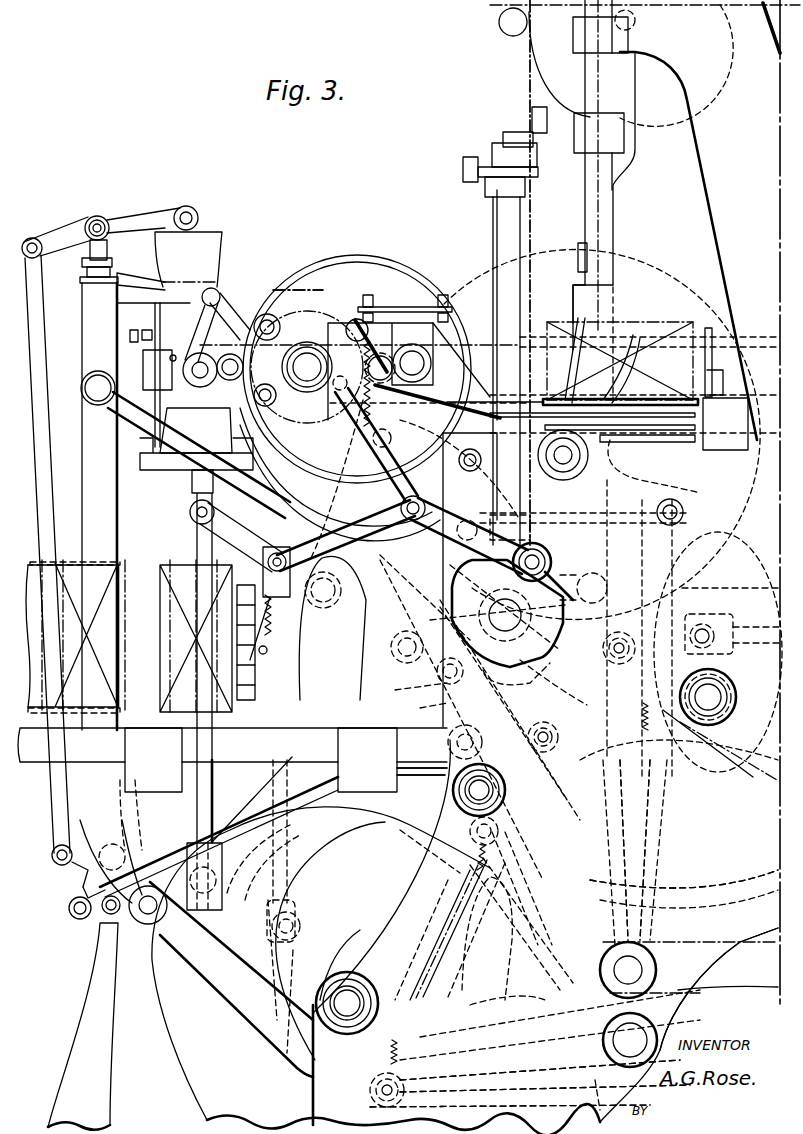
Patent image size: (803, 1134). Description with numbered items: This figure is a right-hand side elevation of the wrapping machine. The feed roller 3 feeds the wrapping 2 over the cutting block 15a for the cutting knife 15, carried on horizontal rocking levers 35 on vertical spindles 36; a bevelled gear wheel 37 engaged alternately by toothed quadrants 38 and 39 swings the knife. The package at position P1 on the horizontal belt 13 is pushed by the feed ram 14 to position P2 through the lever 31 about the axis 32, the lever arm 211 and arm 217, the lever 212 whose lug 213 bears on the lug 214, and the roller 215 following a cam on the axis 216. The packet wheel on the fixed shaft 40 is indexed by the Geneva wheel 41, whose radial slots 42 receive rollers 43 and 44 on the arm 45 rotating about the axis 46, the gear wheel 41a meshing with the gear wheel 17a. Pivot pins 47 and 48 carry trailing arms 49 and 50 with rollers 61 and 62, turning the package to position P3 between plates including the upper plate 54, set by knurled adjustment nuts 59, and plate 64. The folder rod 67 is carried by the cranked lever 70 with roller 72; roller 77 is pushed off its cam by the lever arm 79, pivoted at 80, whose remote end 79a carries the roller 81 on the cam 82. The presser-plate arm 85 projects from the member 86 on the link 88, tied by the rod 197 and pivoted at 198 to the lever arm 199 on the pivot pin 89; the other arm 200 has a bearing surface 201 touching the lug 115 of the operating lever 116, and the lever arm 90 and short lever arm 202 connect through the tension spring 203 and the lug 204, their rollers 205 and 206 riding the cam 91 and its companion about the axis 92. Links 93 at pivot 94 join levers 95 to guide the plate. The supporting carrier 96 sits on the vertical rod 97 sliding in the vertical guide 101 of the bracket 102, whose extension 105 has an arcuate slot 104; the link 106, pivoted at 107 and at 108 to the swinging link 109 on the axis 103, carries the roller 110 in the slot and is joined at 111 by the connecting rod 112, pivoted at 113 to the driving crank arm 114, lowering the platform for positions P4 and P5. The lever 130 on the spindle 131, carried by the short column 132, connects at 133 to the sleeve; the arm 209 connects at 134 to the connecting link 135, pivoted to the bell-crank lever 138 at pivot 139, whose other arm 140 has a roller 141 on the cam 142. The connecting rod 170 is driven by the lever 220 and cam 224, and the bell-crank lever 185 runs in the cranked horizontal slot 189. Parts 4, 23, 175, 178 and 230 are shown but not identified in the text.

The wrapping 2 is at (525, 78).
The feed roller 3 is at (500, 28).
The frame arm 4 is at (657, 107).
The horizontal belt 13 is at (668, 398).
The feed ram 14 is at (725, 345).
The cutting knife 15 is at (503, 140).
The cutting block 15a is at (530, 118).
The gear wheel 17a is at (303, 285).
The beam 23 is at (72, 580).
The lever 31 is at (719, 989).
The axis 32 is at (632, 970).
The horizontal rocking levers 35 is at (463, 165).
The vertical spindles 36 is at (505, 225).
The bevelled gear wheel 37 is at (520, 514).
The toothed quadrant 38 is at (488, 694).
The toothed quadrant 39 is at (516, 686).
The fixed shaft 40 is at (307, 350).
The Geneva wheel 41 is at (625, 485).
The gear wheel 41a is at (545, 268).
The radial slots 42 is at (600, 348).
The roller 43 is at (608, 590).
The roller 44 is at (400, 626).
The arm 45 is at (526, 613).
The axis 46 is at (461, 670).
The pivot pin 47 is at (413, 344).
The pivot pin 48 is at (200, 353).
The trailing arm 49 is at (460, 330).
The trailing arm 50 is at (264, 313).
The upper plate 54 is at (395, 300).
The knurled adjustment nuts 59 is at (360, 318).
The roller 61 is at (470, 475).
The roller 62 is at (268, 310).
The packet-retaining plate 64 is at (145, 368).
The folder rod 67 is at (445, 440).
The cranked lever 70 is at (395, 437).
The roller 72 is at (355, 330).
The roller 77 is at (340, 474).
The lever arm 79 is at (340, 455).
The remote end 79a is at (440, 530).
The pivot 80 is at (411, 520).
The roller 81 is at (552, 558).
The cam 82 is at (540, 650).
The arm 85 is at (140, 276).
The member 86 is at (95, 270).
The link 88 is at (100, 500).
The pivot pin 89 is at (630, 1040).
The lever arm 90 is at (478, 1092).
The cam 91 is at (176, 1085).
The axis 92 is at (347, 1005).
The links 93 is at (185, 440).
The pivot 94 is at (98, 405).
The levers 95 is at (722, 587).
The supporting carrier 96 is at (148, 468).
The vertical rod 97 is at (197, 553).
The vertical guide 101 is at (187, 850).
The bracket 102 is at (262, 792).
The axis 103 is at (447, 760).
The arcuate slot 104 is at (367, 749).
The extension 105 is at (290, 700).
The link 106 is at (233, 535).
The pivot 107 is at (200, 515).
The pivotal connection 108 is at (415, 694).
The swinging link 109 is at (422, 712).
The roller 110 is at (335, 590).
The pivot 111 is at (286, 562).
The connecting rod 112 is at (232, 760).
The pivot 113 is at (300, 920).
The driving crank arm 114 is at (305, 965).
The lug 115 is at (530, 900).
The operating lever 116 is at (450, 930).
The lever 130 is at (135, 222).
The spindle 131 is at (97, 216).
The short column 132 is at (95, 246).
The pivotal connection 133 is at (186, 206).
The pivotal connection 134 is at (32, 238).
The connecting link 135 is at (35, 337).
The bell-crank lever 138 is at (80, 860).
The pivot 139 is at (125, 848).
The arm 140 is at (88, 885).
The roller 141 is at (78, 915).
The cam 142 is at (98, 1018).
The connecting rod 170 is at (503, 744).
The rack 175 is at (352, 425).
The beam 178 is at (190, 600).
The bell-crank lever 185 is at (270, 555).
The cranked horizontal slot 189 is at (300, 648).
The rod 197 is at (108, 914).
The pivotal connection 198 is at (145, 915).
The lever arm 199 is at (230, 980).
The arm 200 is at (540, 960).
The bearing surface 201 is at (487, 938).
The short lever arm 202 is at (600, 1095).
The tension spring 203 is at (416, 1052).
The lug 204 is at (540, 1064).
The roller 205 is at (372, 1098).
The roller 206 is at (503, 835).
The arm 209 is at (56, 232).
The lever arm 211 is at (668, 852).
The lever 212 is at (640, 713).
The lug 213 is at (630, 725).
The lug 214 is at (660, 800).
The roller 215 is at (650, 661).
The axis 216 is at (712, 705).
The arm 217 is at (772, 860).
The lever 220 is at (500, 790).
The cam 224 is at (559, 682).
The rod 230 is at (510, 1100).
The first position P1 is at (673, 320).
The second position P2 is at (450, 285).
The third position P3 is at (215, 290).
The fourth position P4 is at (160, 680).
The fifth position P5 is at (128, 600).